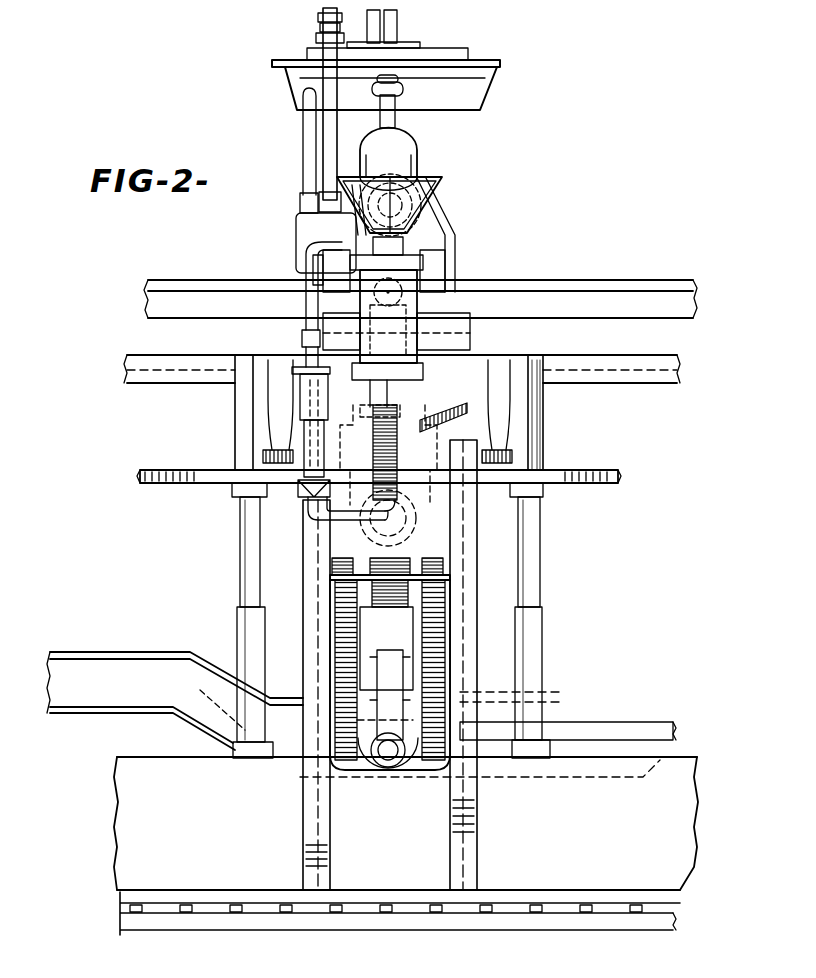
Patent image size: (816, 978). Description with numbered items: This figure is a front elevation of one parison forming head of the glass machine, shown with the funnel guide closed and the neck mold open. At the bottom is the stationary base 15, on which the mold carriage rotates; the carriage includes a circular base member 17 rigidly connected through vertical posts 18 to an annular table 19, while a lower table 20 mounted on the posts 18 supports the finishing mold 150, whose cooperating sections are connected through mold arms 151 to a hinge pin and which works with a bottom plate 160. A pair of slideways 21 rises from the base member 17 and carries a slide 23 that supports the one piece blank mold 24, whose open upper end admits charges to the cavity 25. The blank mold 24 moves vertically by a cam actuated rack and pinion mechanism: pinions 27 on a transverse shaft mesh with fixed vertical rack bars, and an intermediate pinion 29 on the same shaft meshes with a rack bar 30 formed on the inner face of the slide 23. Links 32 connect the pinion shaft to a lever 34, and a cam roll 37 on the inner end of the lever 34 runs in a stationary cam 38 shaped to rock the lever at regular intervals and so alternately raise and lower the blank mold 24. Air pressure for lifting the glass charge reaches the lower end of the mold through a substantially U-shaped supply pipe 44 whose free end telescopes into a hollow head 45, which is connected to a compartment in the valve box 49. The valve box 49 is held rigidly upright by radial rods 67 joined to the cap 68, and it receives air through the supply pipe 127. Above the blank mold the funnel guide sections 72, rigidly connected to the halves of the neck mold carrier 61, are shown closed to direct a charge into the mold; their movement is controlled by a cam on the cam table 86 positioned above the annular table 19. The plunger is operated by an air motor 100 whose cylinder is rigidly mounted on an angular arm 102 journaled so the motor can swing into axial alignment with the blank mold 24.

The stationary base 15 is at (652, 927).
The circular frame or base member 17 is at (680, 828).
The vertical posts 18 is at (240, 570).
The annular table 19 is at (617, 355).
The table 20 is at (582, 468).
The slideways 21 is at (457, 853).
The slide 23 is at (442, 530).
The blank mold 24 is at (413, 310).
The cavity 25 is at (397, 337).
The pinions 27 is at (447, 557).
The intermediate pinion 29 is at (345, 560).
The rack bar 30 is at (447, 617).
The links 32 is at (413, 622).
The lever 34 is at (393, 682).
The cam roll 37 is at (397, 770).
The stationary cam 38 is at (147, 663).
The air pressure supply pipe 44 is at (330, 566).
The hollow head 45 is at (327, 398).
The valve box 49 is at (300, 227).
The neck mold carrier 61 is at (337, 268).
The radial rods 67 is at (328, 125).
The cap 68 is at (479, 88).
The funnel guide sections 72 is at (442, 180).
The cam table 86 is at (550, 303).
The air motor 100 is at (403, 147).
The angular arm 102 is at (440, 218).
The air pressure supply pipe 127 is at (388, 117).
The finishing mold 150 is at (237, 407).
The mold arms 151 is at (458, 405).
The bottom plate 160 is at (400, 540).